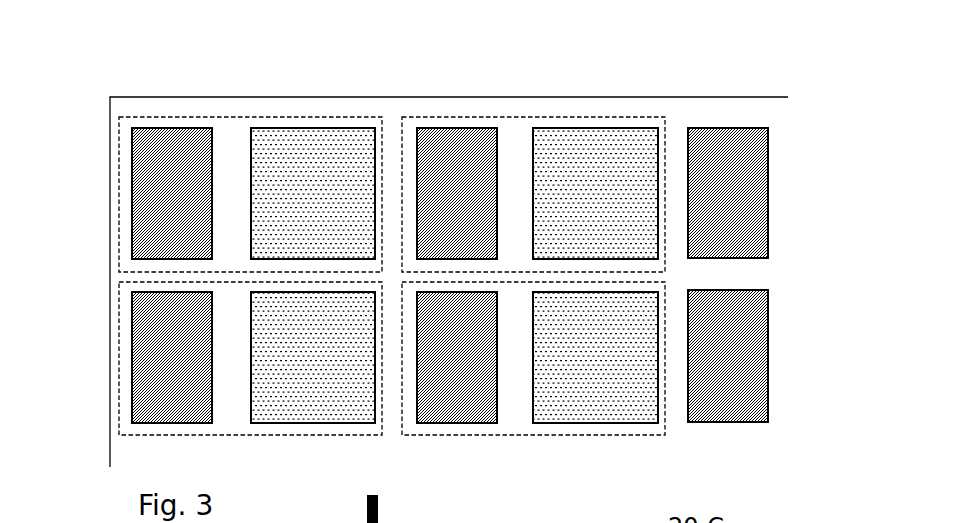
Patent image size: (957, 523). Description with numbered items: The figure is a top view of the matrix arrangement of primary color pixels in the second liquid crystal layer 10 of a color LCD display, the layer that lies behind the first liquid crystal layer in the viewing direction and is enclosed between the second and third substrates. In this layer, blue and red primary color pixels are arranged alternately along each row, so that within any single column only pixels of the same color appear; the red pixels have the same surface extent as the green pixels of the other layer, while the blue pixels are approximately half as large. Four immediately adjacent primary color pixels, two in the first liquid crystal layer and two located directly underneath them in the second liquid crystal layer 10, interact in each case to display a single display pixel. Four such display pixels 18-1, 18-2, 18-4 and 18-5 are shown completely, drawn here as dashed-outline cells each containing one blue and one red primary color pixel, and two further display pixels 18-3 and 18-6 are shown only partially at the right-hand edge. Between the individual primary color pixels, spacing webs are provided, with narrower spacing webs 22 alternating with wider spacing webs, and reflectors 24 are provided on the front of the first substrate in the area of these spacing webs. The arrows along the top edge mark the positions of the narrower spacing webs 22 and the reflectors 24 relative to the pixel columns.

The second liquid crystal layer 10 is at (143, 107).
The display pixel 18-1 is at (198, 186).
The display pixel 18-2 is at (585, 156).
The display pixel 18-3 is at (779, 134).
The display pixel 18-4 is at (203, 376).
The display pixel 18-5 is at (508, 390).
The display pixel 18-6 is at (777, 409).
The narrower spacing web 22 is at (212, 83).
The reflector 24 is at (523, 78).